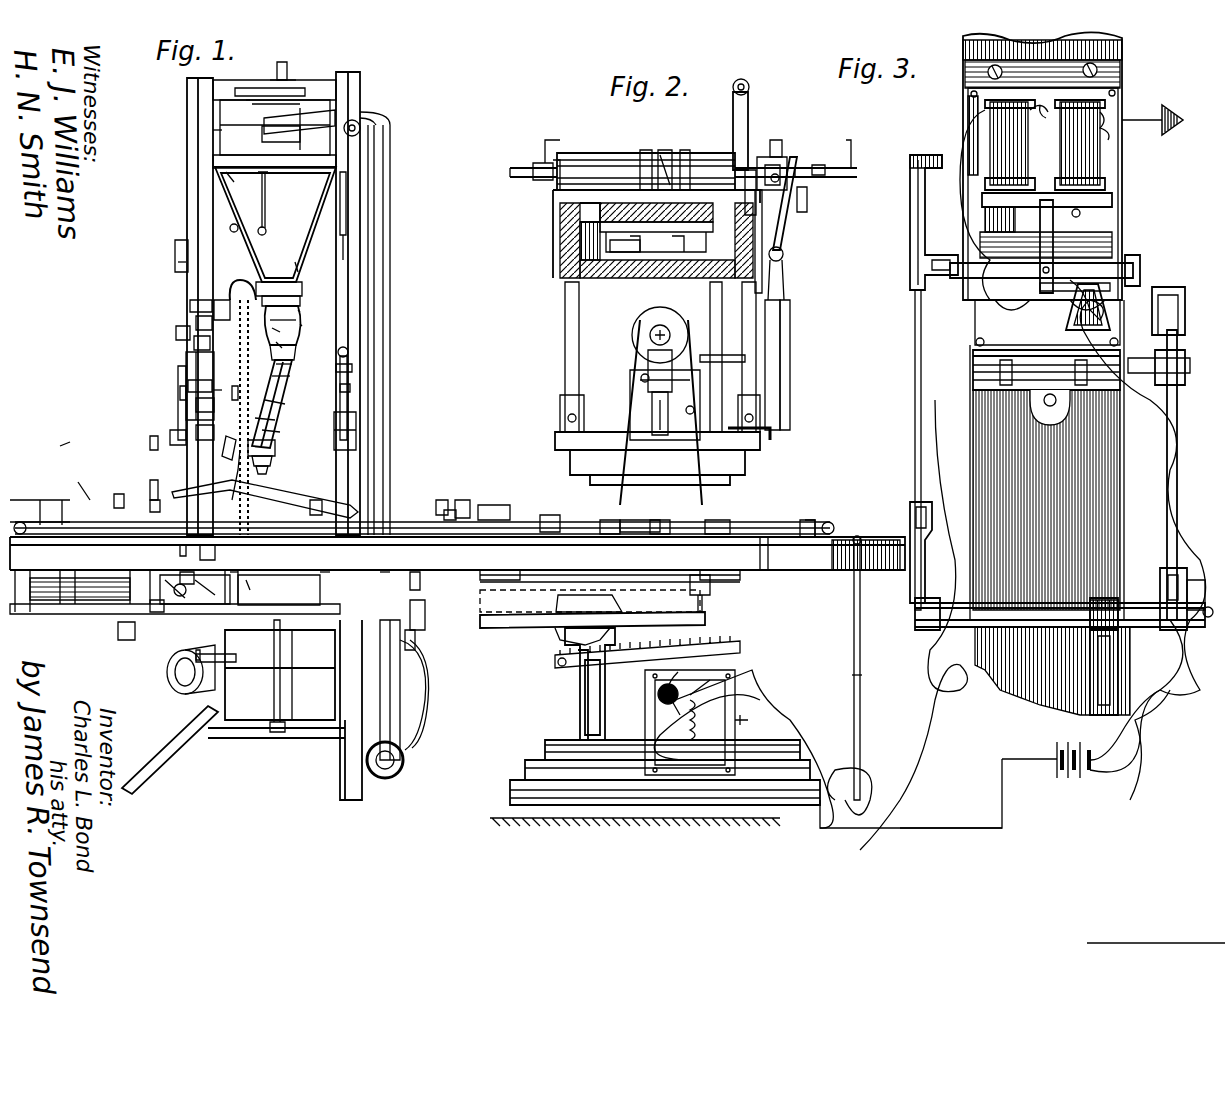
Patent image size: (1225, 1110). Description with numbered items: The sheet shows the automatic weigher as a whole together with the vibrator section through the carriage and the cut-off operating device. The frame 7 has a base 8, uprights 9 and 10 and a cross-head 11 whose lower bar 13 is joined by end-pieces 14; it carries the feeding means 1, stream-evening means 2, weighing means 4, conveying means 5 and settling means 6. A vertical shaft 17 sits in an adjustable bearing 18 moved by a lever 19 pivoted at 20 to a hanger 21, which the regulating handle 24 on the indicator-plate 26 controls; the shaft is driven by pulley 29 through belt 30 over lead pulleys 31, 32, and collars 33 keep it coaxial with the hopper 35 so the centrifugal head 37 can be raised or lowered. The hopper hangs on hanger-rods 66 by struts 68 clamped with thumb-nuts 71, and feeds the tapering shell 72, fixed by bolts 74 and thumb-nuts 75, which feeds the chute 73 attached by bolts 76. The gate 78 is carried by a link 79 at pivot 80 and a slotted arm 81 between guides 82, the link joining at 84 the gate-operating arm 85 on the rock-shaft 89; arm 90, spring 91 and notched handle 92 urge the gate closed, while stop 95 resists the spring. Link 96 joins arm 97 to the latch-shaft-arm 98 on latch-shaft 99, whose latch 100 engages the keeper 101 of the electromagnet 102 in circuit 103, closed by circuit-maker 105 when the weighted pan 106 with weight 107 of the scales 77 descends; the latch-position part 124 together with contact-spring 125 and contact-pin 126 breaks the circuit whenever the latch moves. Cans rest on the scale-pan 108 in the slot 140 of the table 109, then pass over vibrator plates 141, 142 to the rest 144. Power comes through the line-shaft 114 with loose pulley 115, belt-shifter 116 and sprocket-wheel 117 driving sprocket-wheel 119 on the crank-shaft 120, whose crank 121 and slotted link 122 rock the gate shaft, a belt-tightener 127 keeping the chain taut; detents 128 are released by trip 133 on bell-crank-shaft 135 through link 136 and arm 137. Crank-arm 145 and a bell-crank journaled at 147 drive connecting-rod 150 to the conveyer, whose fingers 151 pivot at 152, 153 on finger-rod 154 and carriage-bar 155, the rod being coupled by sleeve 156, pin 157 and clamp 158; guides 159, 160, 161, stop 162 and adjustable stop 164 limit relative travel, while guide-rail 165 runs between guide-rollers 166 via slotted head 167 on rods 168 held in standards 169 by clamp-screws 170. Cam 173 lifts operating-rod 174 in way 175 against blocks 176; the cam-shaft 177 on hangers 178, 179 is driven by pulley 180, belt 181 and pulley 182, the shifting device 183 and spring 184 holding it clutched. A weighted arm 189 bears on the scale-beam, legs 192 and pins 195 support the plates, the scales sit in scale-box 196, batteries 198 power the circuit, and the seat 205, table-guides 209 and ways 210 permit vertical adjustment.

In FIG. 1, the feeding means 1 is at (306, 271).
In FIG. 1, the stream-evening means 2 is at (311, 325).
In FIG. 2, the stream-evening means 2 is at (494, 596).
In FIG. 1, the weighing means 4 is at (270, 520).
In FIG. 1, the conveying means 5 is at (283, 408).
In FIG. 2, the conveying means 5 is at (850, 170).
In FIG. 2, the settling means 6 is at (630, 194).
In FIG. 1, the frame 7 is at (170, 192).
In FIG. 1, the base 8 is at (172, 728).
In FIG. 1, the upright 9 is at (190, 99).
In FIG. 3, the upright 9 is at (1043, 326).
In FIG. 1, the upright 10 is at (362, 90).
In FIG. 1, the cross-head 11 is at (324, 76).
In FIG. 1, the lower bar 13 is at (275, 127).
In FIG. 1, the end-pieces 14 is at (365, 110).
In FIG. 1, the vertical shaft 17 is at (284, 74).
In FIG. 1, the adjustable bearing 18 is at (238, 92).
In FIG. 1, the lever 19 is at (250, 100).
In FIG. 1, the pivot 20 is at (212, 135).
In FIG. 1, the hanger 21 is at (252, 106).
In FIG. 1, the regulating handle 24 is at (164, 250).
In FIG. 1, the indicator-plate 26 is at (176, 262).
In FIG. 1, the pulley 29 is at (280, 126).
In FIG. 1, the belt 30 is at (310, 135).
In FIG. 1, the lead pulley 31 is at (352, 136).
In FIG. 1, the lead pulley 32 is at (392, 150).
In FIG. 1, the shouldered collar 33 is at (287, 80).
In FIG. 1, the hopper 35 is at (275, 224).
In FIG. 1, the centrifugal head 37 is at (242, 180).
In FIG. 1, the hanger-rods 66 is at (352, 228).
In FIG. 1, the struts 68 is at (266, 211).
In FIG. 1, the thumb-nuts 71 is at (266, 233).
In FIG. 1, the shell 72 is at (302, 310).
In FIG. 1, the chute 73 is at (280, 396).
In FIG. 1, the bolts 74 is at (260, 298).
In FIG. 1, the thumb-nuts 75 is at (262, 284).
In FIG. 1, the bolts 76 is at (296, 348).
In FIG. 1, the scales 77 is at (170, 612).
In FIG. 2, the scales 77 is at (558, 698).
In FIG. 1, the gate 78 is at (280, 460).
In FIG. 1, the link 79 is at (276, 443).
In FIG. 1, the pivot 80 is at (282, 452).
In FIG. 1, the slotted arm 81 is at (280, 424).
In FIG. 1, the guides 82 is at (285, 434).
In FIG. 1, the pivot 84 is at (280, 382).
In FIG. 1, the gate-operating arm 85 is at (283, 368).
In FIG. 1, the rock-shaft 89 is at (346, 352).
In FIG. 3, the rock-shaft 89 is at (1076, 600).
In FIG. 1, the arm 90 is at (350, 370).
In FIG. 1, the spring 91 is at (350, 388).
In FIG. 1, the notched handle 92 is at (358, 438).
In FIG. 1, the stop 95 is at (192, 380).
In FIG. 3, the stop 95 is at (1080, 652).
In FIG. 1, the link 96 is at (200, 352).
In FIG. 3, the link 96 is at (912, 328).
In FIG. 1, the arm 97 is at (186, 370).
In FIG. 2, the arm 97 is at (918, 560).
In FIG. 3, the arm 97 is at (918, 560).
In FIG. 1, the latch-shaft-arm 98 is at (196, 320).
In FIG. 3, the latch-shaft-arm 98 is at (912, 226).
In FIG. 3, the latch-shaft 99 is at (1095, 262).
In FIG. 3, the latch 100 is at (1052, 244).
In FIG. 3, the keeper 101 is at (1095, 200).
In FIG. 3, the electromagnet 102 is at (1040, 170).
In FIG. 1, the electric circuit 103 is at (196, 405).
In FIG. 2, the electric circuit 103 is at (950, 826).
In FIG. 3, the electric circuit 103 is at (950, 826).
In FIG. 1, the circuit-maker 105 is at (200, 556).
In FIG. 2, the circuit-maker 105 is at (757, 655).
In FIG. 2, the weighted pan 106 is at (540, 630).
In FIG. 2, the weight 107 is at (590, 596).
In FIG. 1, the scale-pan 108 is at (274, 559).
In FIG. 2, the scale-pan 108 is at (760, 550).
In FIG. 1, the table 109 is at (210, 470).
In FIG. 2, the table 109 is at (526, 568).
In FIG. 1, the line-shaft 114 is at (320, 664).
In FIG. 1, the loose pulley 115 is at (130, 650).
In FIG. 1, the belt-shifter 116 is at (150, 488).
In FIG. 1, the sprocket-wheel 117 is at (258, 668).
In FIG. 1, the sprocket-wheel 119 is at (276, 346).
In FIG. 1, the crank-shaft 120 is at (272, 330).
In FIG. 1, the crank 121 is at (276, 319).
In FIG. 1, the slotted link 122 is at (288, 309).
In FIG. 1, the arm 124 is at (194, 340).
In FIG. 3, the contact-spring 125 is at (1105, 300).
In FIG. 1, the contact-pin 126 is at (210, 292).
In FIG. 3, the contact-pin 126 is at (1000, 312).
In FIG. 1, the belt-tightener 127 is at (170, 436).
In FIG. 1, the detents 128 is at (232, 393).
In FIG. 2, the trip 133 is at (614, 516).
In FIG. 3, the trip 133 is at (1180, 292).
In FIG. 1, the bell-crank-shaft 135 is at (190, 306).
In FIG. 3, the bell-crank-shaft 135 is at (1140, 372).
In FIG. 1, the link 136 is at (176, 332).
In FIG. 3, the link 136 is at (1170, 460).
In FIG. 1, the arm 137 is at (180, 390).
In FIG. 3, the arm 137 is at (1168, 575).
In FIG. 1, the slot 140 is at (397, 559).
In FIG. 1, the vibrator plate 141 is at (343, 559).
In FIG. 2, the vibrator plate 142 is at (556, 212).
In FIG. 2, the stationary rest 144 is at (885, 540).
In FIG. 1, the crank-arm 145 is at (144, 504).
In FIG. 1, the bell-crank journal 147 is at (208, 462).
In FIG. 1, the connecting-rod 150 is at (318, 500).
In FIG. 2, the connecting-rod 150 is at (810, 205).
In FIG. 1, the fingers 151 is at (118, 498).
In FIG. 2, the fingers 151 is at (705, 175).
In FIG. 2, the pivots 152 is at (790, 158).
In FIG. 1, the pivots 153 is at (306, 594).
In FIG. 2, the pivots 153 is at (752, 110).
In FIG. 2, the finger-rod 154 is at (804, 150).
In FIG. 1, the carriage-bar 155 is at (80, 480).
In FIG. 2, the carriage-bar 155 is at (770, 160).
In FIG. 2, the sleeve 156 is at (830, 168).
In FIG. 1, the pin 157 is at (450, 515).
In FIG. 1, the clamp 158 is at (440, 500).
In FIG. 2, the clamp 158 is at (800, 240).
In FIG. 1, the guide 159 is at (62, 445).
In FIG. 2, the guide 160 is at (548, 515).
In FIG. 2, the guide 161 is at (805, 520).
In FIG. 2, the stop 162 is at (506, 466).
In FIG. 1, the adjustable stop 164 is at (204, 389).
In FIG. 1, the guide-rail 165 is at (150, 590).
In FIG. 2, the guide-rail 165 is at (690, 170).
In FIG. 1, the guide-rollers 166 is at (462, 500).
In FIG. 2, the guide-rollers 166 is at (655, 170).
In FIG. 1, the slotted head 167 is at (48, 516).
In FIG. 2, the slotted head 167 is at (830, 178).
In FIG. 1, the rods 168 is at (180, 548).
In FIG. 2, the rods 168 is at (533, 165).
In FIG. 1, the standards 169 is at (185, 572).
In FIG. 2, the standards 169 is at (553, 192).
In FIG. 2, the clamp-screws 170 is at (580, 140).
In FIG. 1, the cam 173 is at (420, 625).
In FIG. 2, the cam 173 is at (680, 318).
In FIG. 1, the vibrator operating-rod 174 is at (430, 568).
In FIG. 2, the vibrator operating-rod 174 is at (640, 318).
In FIG. 2, the vertical way 175 is at (575, 270).
In FIG. 1, the blocks 176 is at (430, 640).
In FIG. 2, the blocks 176 is at (580, 228).
In FIG. 2, the cam-shaft 177 is at (688, 340).
In FIG. 2, the hanger 178 is at (700, 585).
In FIG. 2, the hanger 179 is at (645, 352).
In FIG. 2, the pulley 180 is at (690, 326).
In FIG. 1, the belt 181 is at (430, 692).
In FIG. 2, the belt 181 is at (760, 360).
In FIG. 1, the pulley 182 is at (432, 678).
In FIG. 2, the shifting device 183 is at (803, 400).
In FIG. 2, the spring 184 is at (770, 445).
In FIG. 1, the weighted arm 189 is at (160, 615).
In FIG. 2, the weighted arm 189 is at (790, 378).
In FIG. 2, the legs 192 is at (600, 246).
In FIG. 2, the pins 195 is at (770, 275).
In FIG. 2, the scale-box 196 is at (580, 310).
In FIG. 1, the batteries 198 is at (120, 640).
In FIG. 3, the batteries 198 is at (1095, 772).
In FIG. 1, the seat 205 is at (272, 730).
In FIG. 1, the table-guides 209 is at (150, 440).
In FIG. 1, the ways 210 is at (196, 430).